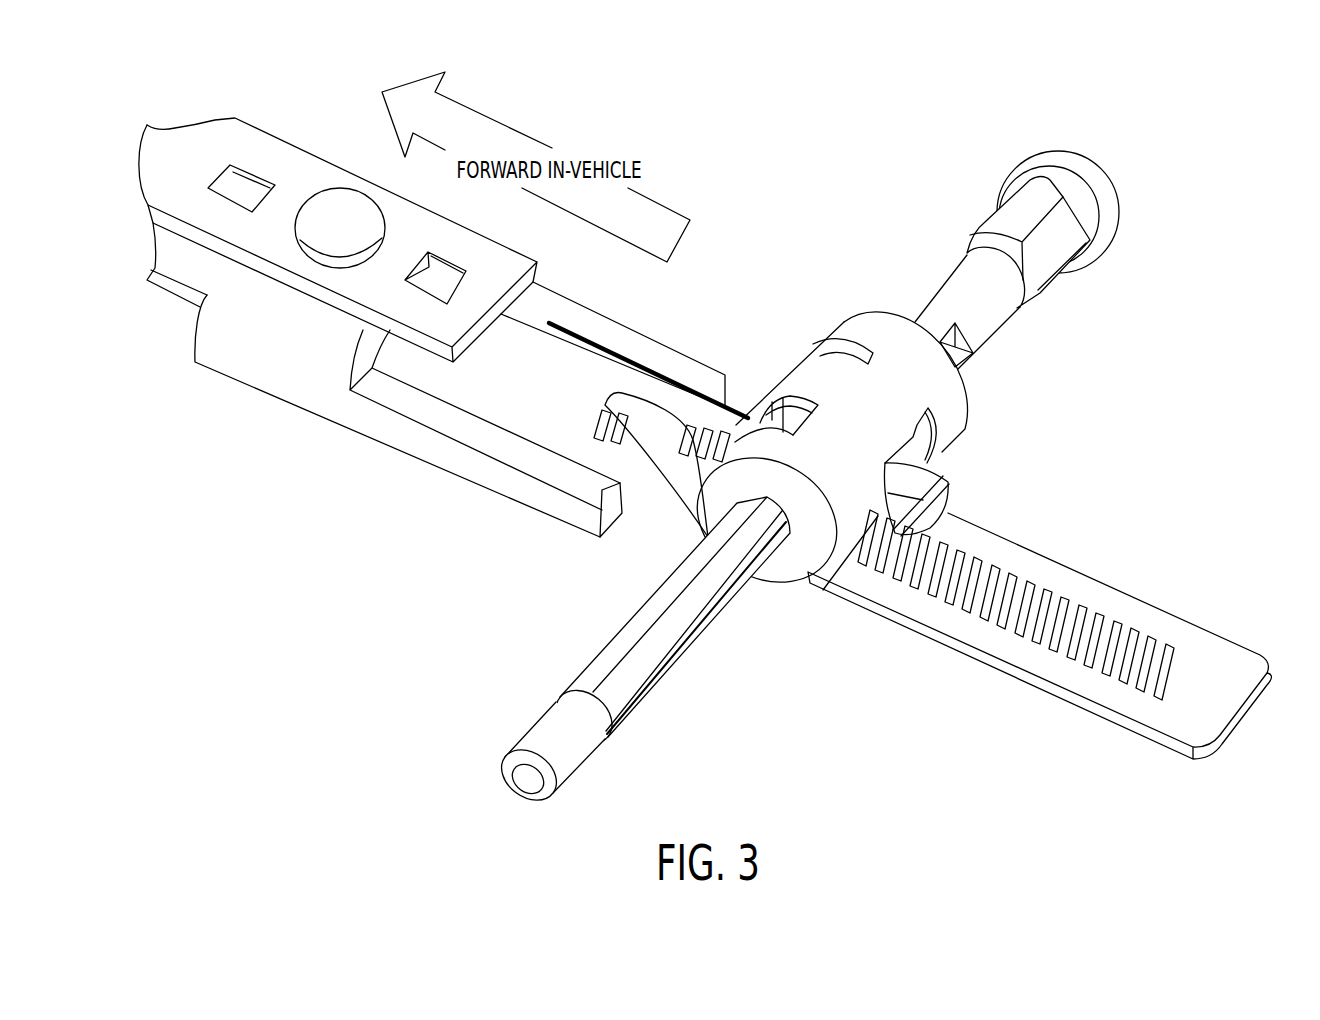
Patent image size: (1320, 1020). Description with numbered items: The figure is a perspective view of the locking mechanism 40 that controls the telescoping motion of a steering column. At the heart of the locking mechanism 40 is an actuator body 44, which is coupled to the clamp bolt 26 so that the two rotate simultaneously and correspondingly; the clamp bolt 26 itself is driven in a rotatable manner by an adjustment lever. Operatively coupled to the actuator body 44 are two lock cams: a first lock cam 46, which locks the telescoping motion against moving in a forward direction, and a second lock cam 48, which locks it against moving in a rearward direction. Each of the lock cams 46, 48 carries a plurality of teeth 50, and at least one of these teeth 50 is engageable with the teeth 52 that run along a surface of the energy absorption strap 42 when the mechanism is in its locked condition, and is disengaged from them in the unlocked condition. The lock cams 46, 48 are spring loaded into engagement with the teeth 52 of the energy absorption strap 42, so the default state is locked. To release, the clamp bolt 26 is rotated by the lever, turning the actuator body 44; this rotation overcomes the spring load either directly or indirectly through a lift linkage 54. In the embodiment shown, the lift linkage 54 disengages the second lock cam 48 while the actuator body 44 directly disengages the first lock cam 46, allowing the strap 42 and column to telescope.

The clamp bolt 26 is at (1088, 168).
The locking mechanism 40 is at (833, 292).
The energy absorption strap 42 is at (1053, 673).
The actuator body 44 is at (968, 388).
The first lock cam 46 is at (965, 498).
The second lock cam 48 is at (680, 443).
The teeth 50 is at (884, 533).
The teeth 52 is at (987, 603).
The lift linkage 54 is at (630, 400).